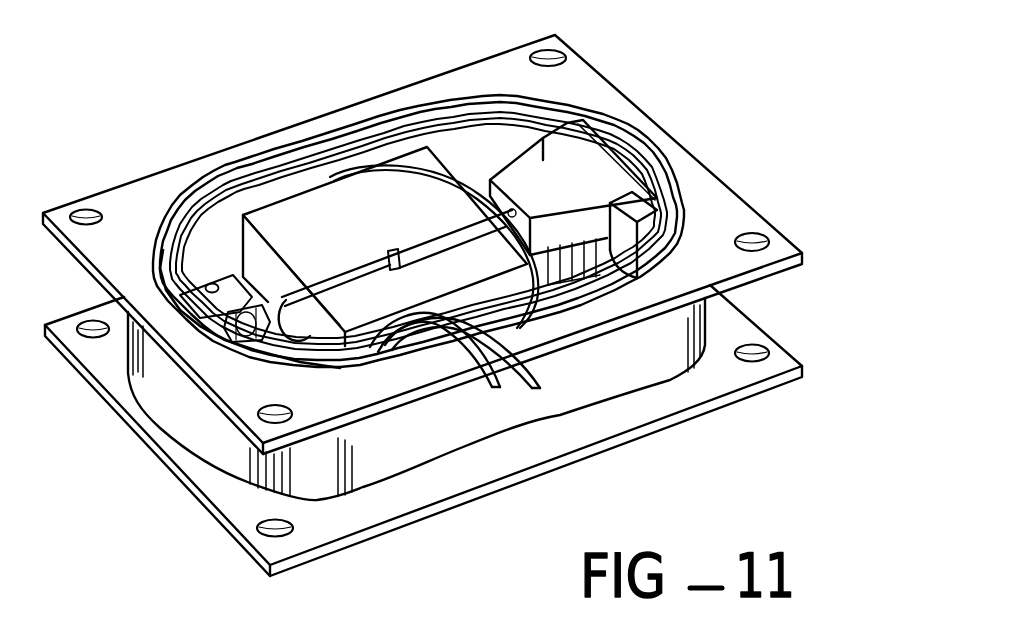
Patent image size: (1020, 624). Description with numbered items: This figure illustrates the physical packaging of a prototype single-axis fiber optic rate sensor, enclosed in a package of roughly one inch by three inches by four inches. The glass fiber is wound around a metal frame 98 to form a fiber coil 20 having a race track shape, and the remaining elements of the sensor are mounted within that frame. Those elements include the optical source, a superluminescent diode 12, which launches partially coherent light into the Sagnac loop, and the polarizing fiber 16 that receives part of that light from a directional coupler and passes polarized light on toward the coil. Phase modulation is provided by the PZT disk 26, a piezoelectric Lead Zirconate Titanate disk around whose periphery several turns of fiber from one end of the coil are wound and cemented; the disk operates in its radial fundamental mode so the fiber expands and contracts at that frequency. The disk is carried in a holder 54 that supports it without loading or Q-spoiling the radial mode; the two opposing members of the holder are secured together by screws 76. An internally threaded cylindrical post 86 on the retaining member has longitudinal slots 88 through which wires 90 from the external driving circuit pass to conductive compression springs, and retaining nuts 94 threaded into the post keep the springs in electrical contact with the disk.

The superluminescent diode 12 is at (587, 170).
The polarizing fiber 16 is at (320, 190).
The fiber coil 20 is at (633, 378).
The PZT disk 26 is at (305, 320).
The holder 54 is at (203, 262).
The screws 76 is at (206, 287).
The internally threaded cylindrical post 86 is at (238, 330).
The longitudinal slots 88 is at (238, 335).
The wires 90 is at (298, 357).
The retaining nuts 94 is at (238, 338).
The metal frame 98 is at (466, 64).